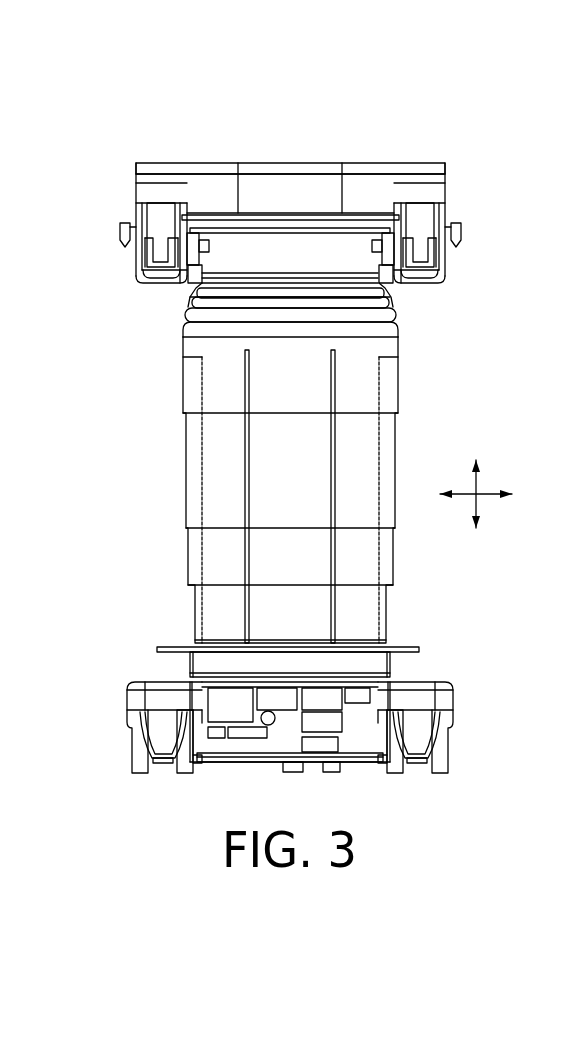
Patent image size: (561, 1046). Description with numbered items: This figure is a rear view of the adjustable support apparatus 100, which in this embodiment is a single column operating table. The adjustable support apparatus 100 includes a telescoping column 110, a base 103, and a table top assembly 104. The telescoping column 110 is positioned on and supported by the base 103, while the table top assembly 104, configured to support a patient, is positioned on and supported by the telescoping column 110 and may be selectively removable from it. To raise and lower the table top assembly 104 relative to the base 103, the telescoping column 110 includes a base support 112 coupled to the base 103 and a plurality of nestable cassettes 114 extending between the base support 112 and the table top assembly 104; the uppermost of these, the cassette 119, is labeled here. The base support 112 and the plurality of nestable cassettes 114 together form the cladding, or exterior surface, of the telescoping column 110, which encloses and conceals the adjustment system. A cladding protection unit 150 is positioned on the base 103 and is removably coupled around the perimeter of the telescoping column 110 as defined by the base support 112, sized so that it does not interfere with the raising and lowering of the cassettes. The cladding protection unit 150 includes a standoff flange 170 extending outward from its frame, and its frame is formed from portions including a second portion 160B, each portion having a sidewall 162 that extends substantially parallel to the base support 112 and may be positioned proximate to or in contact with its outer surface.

The adjustable support apparatus 100 is at (440, 112).
The table top assembly 104 is at (285, 148).
The telescoping column 110 is at (142, 440).
The plurality of nestable cassettes 114 is at (136, 485).
The cassette 119 is at (400, 382).
The base support 112 is at (390, 642).
The standoff flange 170 is at (157, 649).
The cladding protection unit 150 is at (442, 649).
The second portion 160B is at (415, 667).
The base 103 is at (122, 667).
The sidewall 162 is at (240, 668).